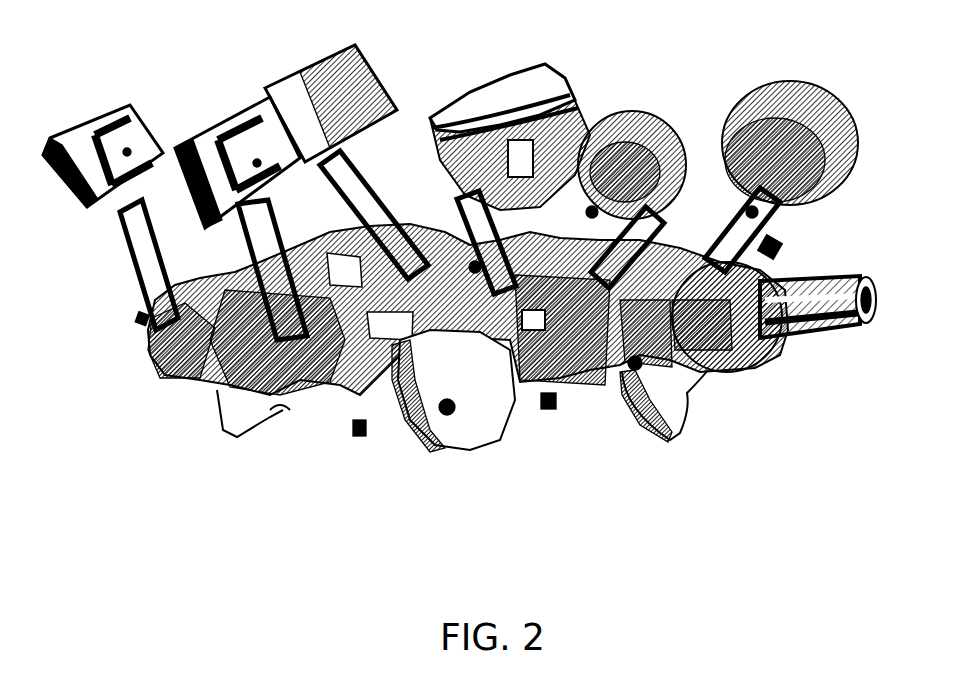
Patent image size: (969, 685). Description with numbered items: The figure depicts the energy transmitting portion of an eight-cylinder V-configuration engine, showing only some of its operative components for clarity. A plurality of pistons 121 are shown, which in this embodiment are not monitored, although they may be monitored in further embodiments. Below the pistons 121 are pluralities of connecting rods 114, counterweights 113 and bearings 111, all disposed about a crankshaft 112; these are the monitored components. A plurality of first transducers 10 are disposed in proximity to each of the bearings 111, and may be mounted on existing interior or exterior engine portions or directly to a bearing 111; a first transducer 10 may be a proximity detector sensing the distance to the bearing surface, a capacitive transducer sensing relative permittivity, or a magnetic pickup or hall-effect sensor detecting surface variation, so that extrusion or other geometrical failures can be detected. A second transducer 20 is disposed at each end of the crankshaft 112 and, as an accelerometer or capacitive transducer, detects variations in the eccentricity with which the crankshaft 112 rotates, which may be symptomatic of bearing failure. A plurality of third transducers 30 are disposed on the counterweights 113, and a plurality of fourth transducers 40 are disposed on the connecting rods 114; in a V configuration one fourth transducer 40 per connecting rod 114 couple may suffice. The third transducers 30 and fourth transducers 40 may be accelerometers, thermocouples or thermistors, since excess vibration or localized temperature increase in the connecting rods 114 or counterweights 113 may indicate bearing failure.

The first transducer 10 is at (137, 318).
The second transducer 20 is at (145, 350).
The third transducer 30 is at (272, 415).
The fourth transducer 40 is at (470, 256).
The bearing 111 is at (165, 372).
The crankshaft 112 is at (822, 320).
The counterweight 113 is at (230, 432).
The connecting rod 114 is at (148, 234).
The piston 121 is at (278, 86).